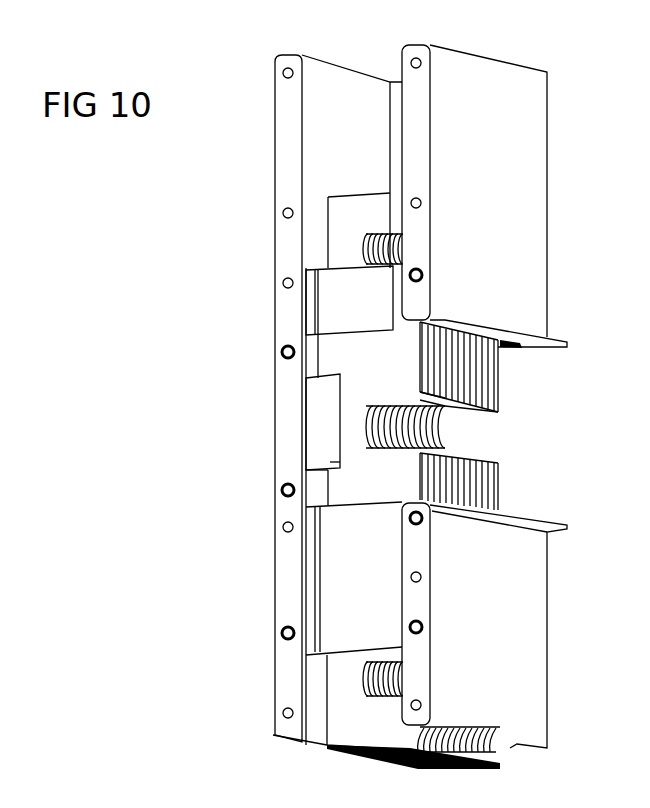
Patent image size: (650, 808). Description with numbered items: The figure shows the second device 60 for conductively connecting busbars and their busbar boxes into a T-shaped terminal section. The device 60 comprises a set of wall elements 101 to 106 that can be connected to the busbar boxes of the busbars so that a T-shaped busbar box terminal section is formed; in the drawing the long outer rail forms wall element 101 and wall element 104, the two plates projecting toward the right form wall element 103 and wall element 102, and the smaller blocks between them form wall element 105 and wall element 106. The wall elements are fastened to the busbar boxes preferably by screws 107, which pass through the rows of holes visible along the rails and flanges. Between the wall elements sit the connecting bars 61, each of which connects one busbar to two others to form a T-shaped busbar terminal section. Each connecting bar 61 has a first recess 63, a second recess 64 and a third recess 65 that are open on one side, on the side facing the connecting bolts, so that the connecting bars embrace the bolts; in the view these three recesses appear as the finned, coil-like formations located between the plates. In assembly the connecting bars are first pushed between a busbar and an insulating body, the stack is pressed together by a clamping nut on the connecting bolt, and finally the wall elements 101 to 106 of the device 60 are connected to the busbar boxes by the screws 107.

The second device 60 is at (210, 262).
The connecting bars 61 is at (343, 197).
The first recess 63 is at (455, 442).
The second recess 64 is at (364, 694).
The third recess 65 is at (370, 234).
The wall element 101 is at (294, 142).
The wall element 102 is at (535, 641).
The wall element 103 is at (535, 187).
The wall element 104 is at (290, 592).
The wall element 105 is at (318, 417).
The wall element 106 is at (340, 306).
The screws 107 is at (286, 352).